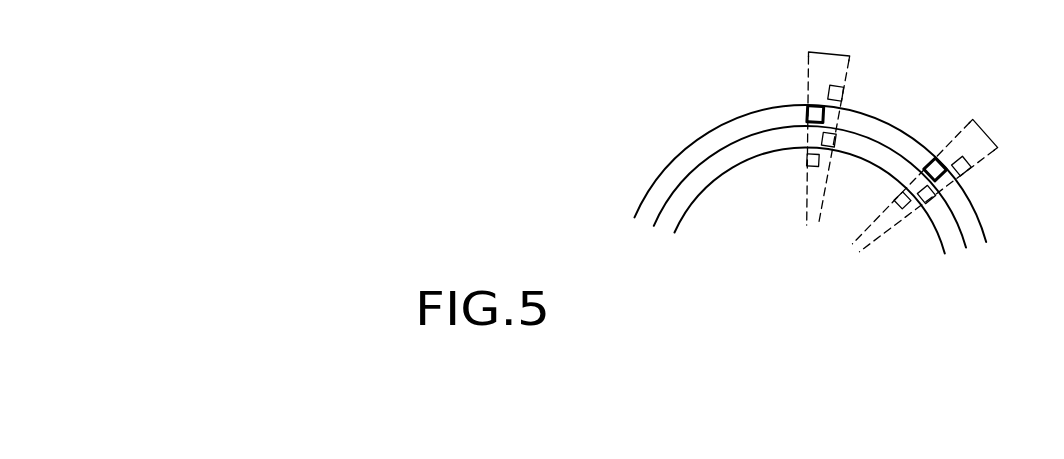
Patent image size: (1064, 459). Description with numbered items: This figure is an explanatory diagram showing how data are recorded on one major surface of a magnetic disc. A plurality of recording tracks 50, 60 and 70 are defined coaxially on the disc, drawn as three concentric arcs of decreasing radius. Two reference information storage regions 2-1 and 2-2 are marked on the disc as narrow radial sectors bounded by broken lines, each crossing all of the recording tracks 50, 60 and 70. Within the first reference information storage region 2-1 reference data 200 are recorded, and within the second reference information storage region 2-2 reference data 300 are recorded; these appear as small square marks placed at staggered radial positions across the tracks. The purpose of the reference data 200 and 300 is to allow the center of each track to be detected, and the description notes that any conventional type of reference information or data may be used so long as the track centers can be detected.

The recording track 50 is at (991, 247).
The recording track 60 is at (966, 252).
The recording track 70 is at (946, 258).
The reference information storage region 2-1 is at (829, 53).
The reference data 200 is at (832, 108).
The reference information storage region 2-2 is at (986, 133).
The reference data 300 is at (960, 157).